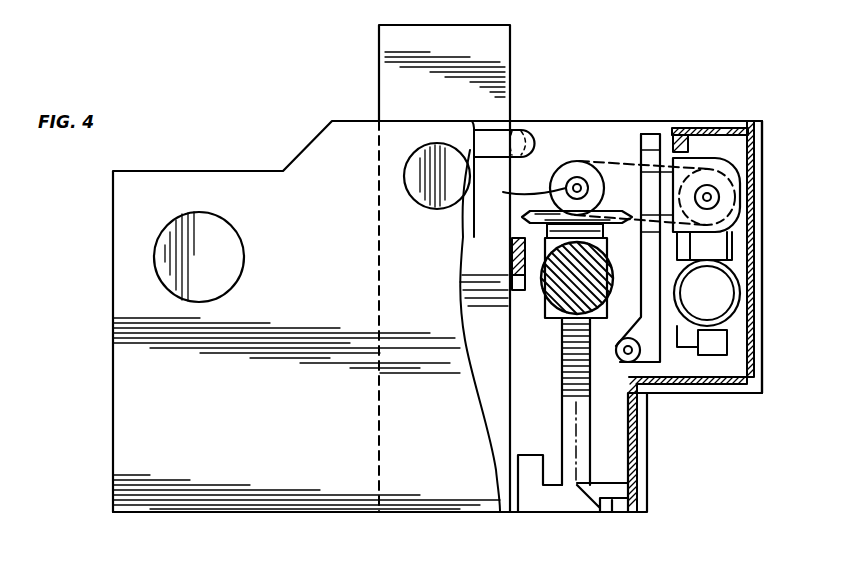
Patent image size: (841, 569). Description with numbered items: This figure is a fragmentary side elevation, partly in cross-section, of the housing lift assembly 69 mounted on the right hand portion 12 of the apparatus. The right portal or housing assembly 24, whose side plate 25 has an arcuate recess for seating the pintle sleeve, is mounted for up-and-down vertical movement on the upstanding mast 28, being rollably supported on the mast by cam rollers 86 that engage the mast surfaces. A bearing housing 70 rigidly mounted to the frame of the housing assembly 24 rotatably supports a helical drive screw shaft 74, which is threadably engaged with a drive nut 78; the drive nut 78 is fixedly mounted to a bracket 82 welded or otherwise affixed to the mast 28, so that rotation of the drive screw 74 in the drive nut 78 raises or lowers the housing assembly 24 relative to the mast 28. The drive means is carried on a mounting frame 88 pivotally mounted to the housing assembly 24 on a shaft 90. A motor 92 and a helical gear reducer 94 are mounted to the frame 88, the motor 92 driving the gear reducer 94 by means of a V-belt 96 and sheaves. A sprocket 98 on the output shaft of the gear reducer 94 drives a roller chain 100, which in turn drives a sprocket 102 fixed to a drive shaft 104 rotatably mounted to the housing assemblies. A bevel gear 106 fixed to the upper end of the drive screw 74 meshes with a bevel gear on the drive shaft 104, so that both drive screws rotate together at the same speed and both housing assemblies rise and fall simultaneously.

The right hand portion 12 is at (292, 133).
The right portal or housing assembly 24 is at (100, 423).
The side plate 25 is at (292, 433).
The upstanding mast 28 is at (510, 38).
The housing lift assembly 69 is at (646, 68).
The bearing housing 70 is at (549, 318).
The helical drive screw shaft 74 is at (572, 392).
The drive nut 78 is at (640, 497).
The bracket 82 is at (550, 495).
The cam roller 86 is at (531, 126).
The mounting frame 88 is at (647, 138).
The shaft 90 is at (622, 362).
The motor 92 is at (720, 295).
The helical gear reducer 94 is at (740, 176).
The V-belt 96 is at (742, 245).
The sprocket 98 is at (724, 199).
The roller chain 100 is at (716, 132).
The sprocket 102 is at (580, 170).
The drive shaft 104 is at (521, 190).
The bevel gear 106 is at (522, 218).